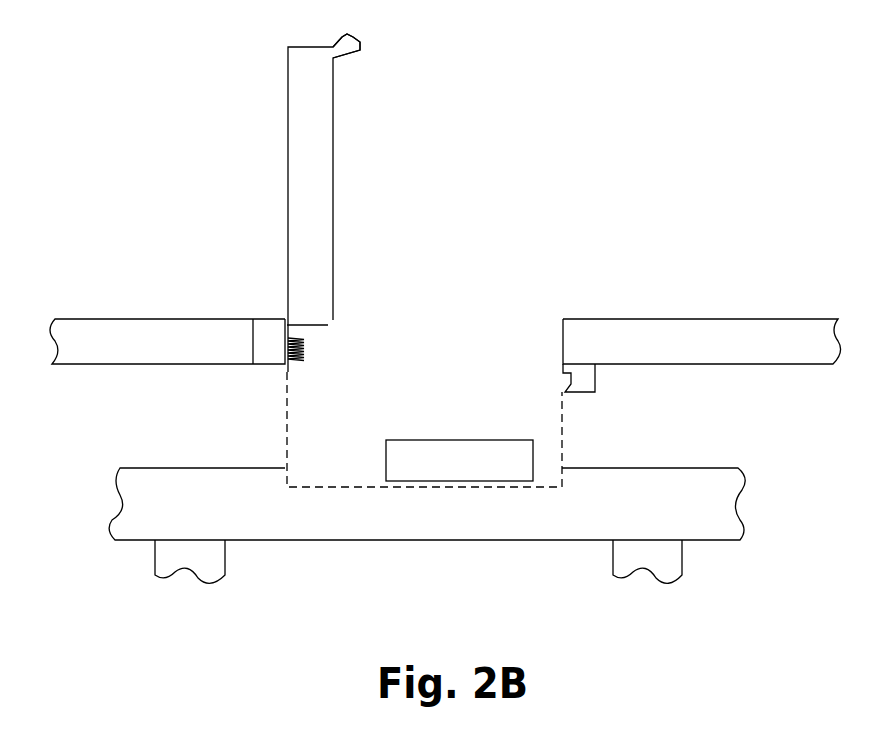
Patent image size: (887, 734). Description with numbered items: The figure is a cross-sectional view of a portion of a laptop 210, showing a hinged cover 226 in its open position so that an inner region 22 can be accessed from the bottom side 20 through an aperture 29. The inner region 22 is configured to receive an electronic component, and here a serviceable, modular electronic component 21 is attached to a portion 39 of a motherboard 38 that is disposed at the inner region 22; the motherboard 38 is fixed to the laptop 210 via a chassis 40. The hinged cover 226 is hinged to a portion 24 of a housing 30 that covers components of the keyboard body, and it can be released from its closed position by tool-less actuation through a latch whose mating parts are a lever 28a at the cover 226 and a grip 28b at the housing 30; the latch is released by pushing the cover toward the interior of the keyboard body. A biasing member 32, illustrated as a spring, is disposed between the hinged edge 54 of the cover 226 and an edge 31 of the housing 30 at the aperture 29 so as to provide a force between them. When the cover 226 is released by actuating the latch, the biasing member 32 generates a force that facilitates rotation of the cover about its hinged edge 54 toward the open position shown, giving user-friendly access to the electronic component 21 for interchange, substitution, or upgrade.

The laptop 210 is at (736, 88).
The hinged cover 226 is at (303, 59).
The lever 28a is at (357, 44).
The housing 30 is at (113, 333).
The bottom side 20 is at (146, 266).
The hinged edge 54 is at (262, 275).
The portion 24 is at (275, 328).
The edge 31 is at (328, 325).
The biasing member 32 is at (306, 345).
The aperture 29 is at (474, 305).
The grip 28b is at (583, 384).
The inner region 22 is at (325, 486).
The electronic component 21 is at (472, 469).
The portion of motherboard 39 is at (450, 498).
The motherboard 38 is at (713, 532).
The chassis 40 is at (207, 563).